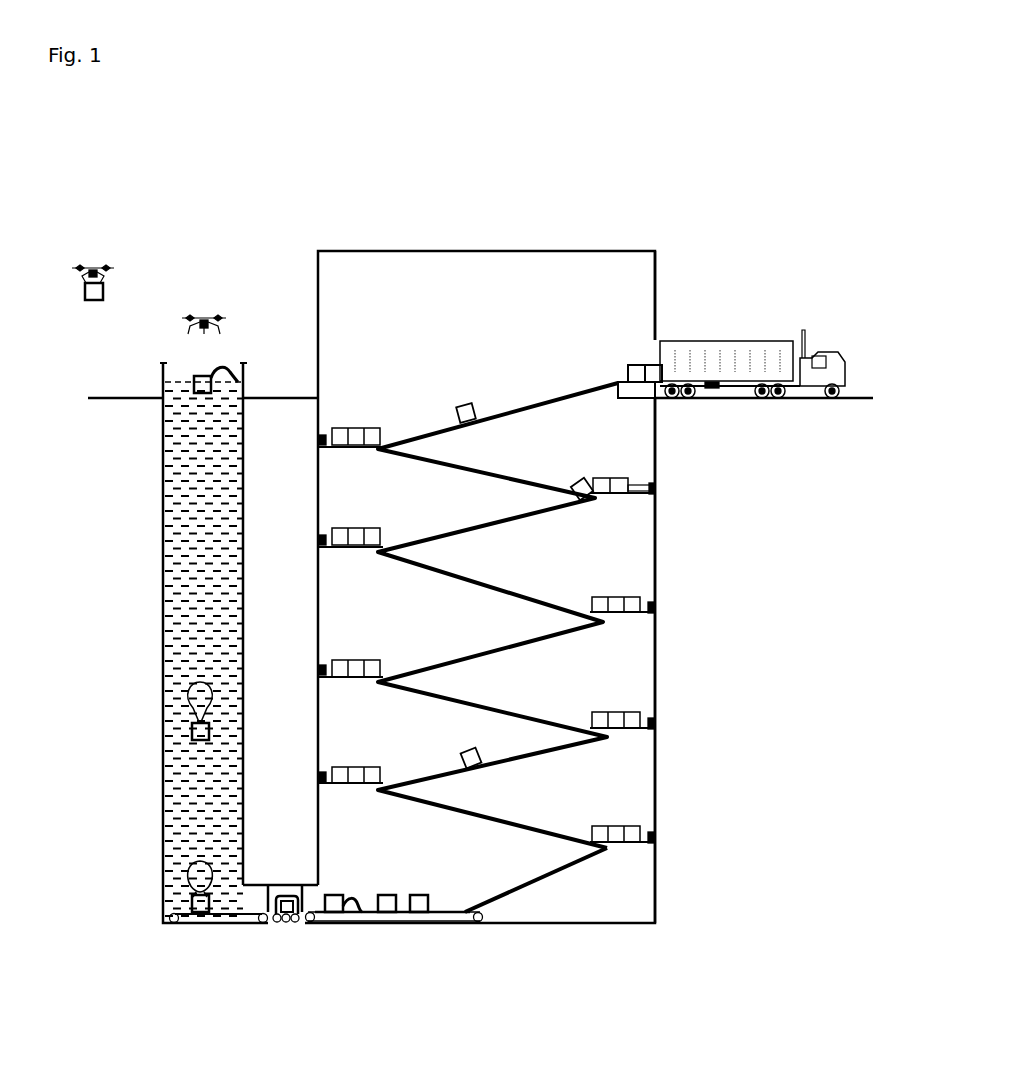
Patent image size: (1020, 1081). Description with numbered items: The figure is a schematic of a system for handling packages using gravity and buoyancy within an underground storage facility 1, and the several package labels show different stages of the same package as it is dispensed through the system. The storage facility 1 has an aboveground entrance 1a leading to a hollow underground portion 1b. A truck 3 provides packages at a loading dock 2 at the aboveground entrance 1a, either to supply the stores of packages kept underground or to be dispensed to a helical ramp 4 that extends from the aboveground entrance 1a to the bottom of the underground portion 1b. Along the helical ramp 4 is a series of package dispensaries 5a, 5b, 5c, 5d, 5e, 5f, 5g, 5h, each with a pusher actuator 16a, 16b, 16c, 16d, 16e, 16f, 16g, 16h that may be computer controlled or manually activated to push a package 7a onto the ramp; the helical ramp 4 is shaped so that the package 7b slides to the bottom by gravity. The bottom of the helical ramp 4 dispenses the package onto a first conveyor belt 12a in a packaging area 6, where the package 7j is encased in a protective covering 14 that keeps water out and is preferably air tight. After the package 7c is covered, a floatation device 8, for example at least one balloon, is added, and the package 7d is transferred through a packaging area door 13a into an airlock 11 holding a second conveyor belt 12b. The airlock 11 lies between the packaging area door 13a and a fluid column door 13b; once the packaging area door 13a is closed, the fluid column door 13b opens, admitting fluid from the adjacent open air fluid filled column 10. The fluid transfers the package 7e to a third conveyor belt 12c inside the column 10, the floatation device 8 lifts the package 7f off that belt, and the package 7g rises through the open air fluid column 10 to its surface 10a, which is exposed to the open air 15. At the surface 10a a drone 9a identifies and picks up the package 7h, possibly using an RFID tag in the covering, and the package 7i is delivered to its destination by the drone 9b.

The storage facility 1 is at (400, 250).
The aboveground entrance 1a is at (657, 275).
The underground portion 1b is at (657, 552).
The loading dock 2 is at (633, 381).
The truck 3 is at (743, 358).
The helical ramp 4 is at (540, 403).
The package dispensary 5a is at (317, 437).
The package dispensary 5b is at (641, 481).
The package dispensary 5c is at (317, 540).
The package dispensary 5d is at (655, 606).
The package dispensary 5e is at (317, 667).
The package dispensary 5f is at (657, 722).
The package dispensary 5g is at (317, 775).
The package dispensary 5h is at (657, 836).
The packaging area 6 is at (502, 914).
The package 7a is at (578, 480).
The package 7b is at (463, 756).
The package 7c is at (389, 895).
The package 7d is at (333, 895).
The package 7e is at (285, 923).
The package 7f is at (204, 915).
The package 7g is at (190, 732).
The package 7h is at (161, 378).
The package 7i is at (92, 301).
The package 7j is at (423, 894).
The floatation device 8 is at (228, 378).
The drone 9a is at (213, 316).
The drone 9b is at (125, 272).
The open air fluid filled column 10 is at (188, 488).
The surface 10a is at (192, 377).
The airlock 11 is at (304, 898).
The first conveyor belt 12a is at (362, 923).
The second conveyor belt 12b is at (301, 923).
The third conveyor belt 12c is at (189, 925).
The packaging area door 13a is at (302, 900).
The fluid column door 13b is at (268, 886).
The protective covering 14 is at (400, 913).
The open air 15 is at (298, 262).
The pusher actuator 16a is at (325, 447).
The pusher actuator 16b is at (657, 493).
The pusher actuator 16c is at (325, 548).
The pusher actuator 16d is at (657, 614).
The pusher actuator 16e is at (325, 680).
The pusher actuator 16f is at (657, 730).
The pusher actuator 16g is at (327, 778).
The pusher actuator 16h is at (657, 846).